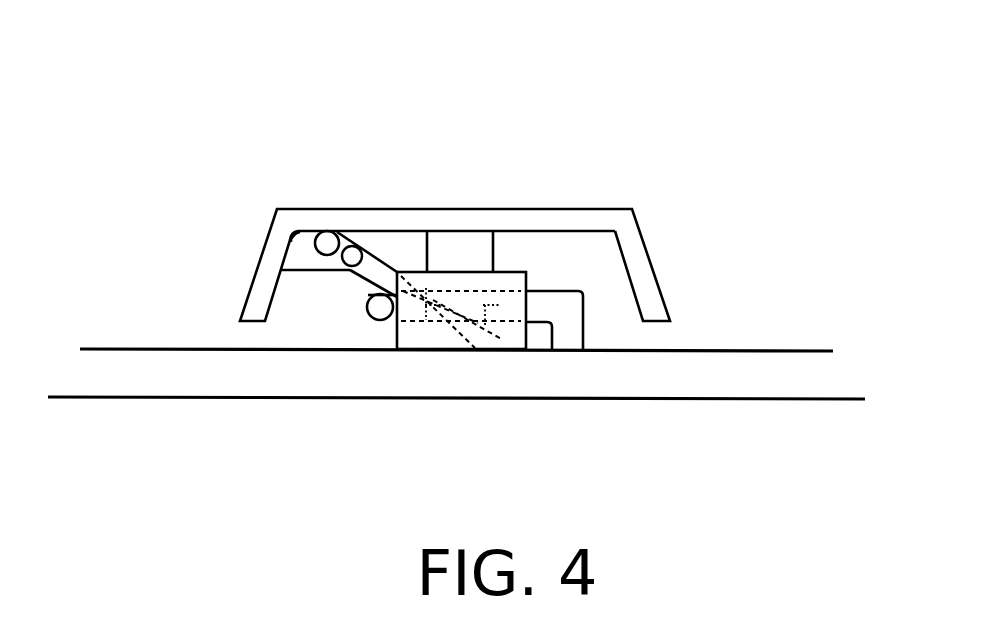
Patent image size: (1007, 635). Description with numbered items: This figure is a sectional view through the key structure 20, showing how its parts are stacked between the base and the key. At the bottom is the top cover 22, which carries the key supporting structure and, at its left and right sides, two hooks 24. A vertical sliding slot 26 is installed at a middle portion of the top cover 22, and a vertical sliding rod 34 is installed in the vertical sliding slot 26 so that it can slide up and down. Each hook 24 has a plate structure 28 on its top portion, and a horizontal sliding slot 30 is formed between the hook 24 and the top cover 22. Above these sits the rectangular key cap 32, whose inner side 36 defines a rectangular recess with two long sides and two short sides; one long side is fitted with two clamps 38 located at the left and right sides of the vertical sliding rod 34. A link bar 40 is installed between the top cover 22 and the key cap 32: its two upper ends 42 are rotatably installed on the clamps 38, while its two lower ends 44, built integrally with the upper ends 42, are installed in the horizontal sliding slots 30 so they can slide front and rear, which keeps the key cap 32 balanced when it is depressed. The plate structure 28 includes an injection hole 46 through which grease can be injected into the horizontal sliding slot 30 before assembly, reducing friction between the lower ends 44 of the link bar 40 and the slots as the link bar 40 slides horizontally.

The key structure 20 is at (650, 83).
The top cover 22 is at (587, 372).
The hook 24 is at (572, 300).
The vertical sliding slot 26 is at (428, 331).
The plate structure 28 is at (383, 305).
The horizontal sliding slot 30 is at (535, 338).
The key cap 32 is at (638, 267).
The vertical sliding rod 34 is at (472, 246).
The inner side 36 is at (550, 231).
The clamp 38 is at (297, 257).
The link bar 40 is at (380, 275).
The upper end 42 is at (320, 240).
The lower end 44 is at (493, 335).
The injection hole 46 is at (496, 300).